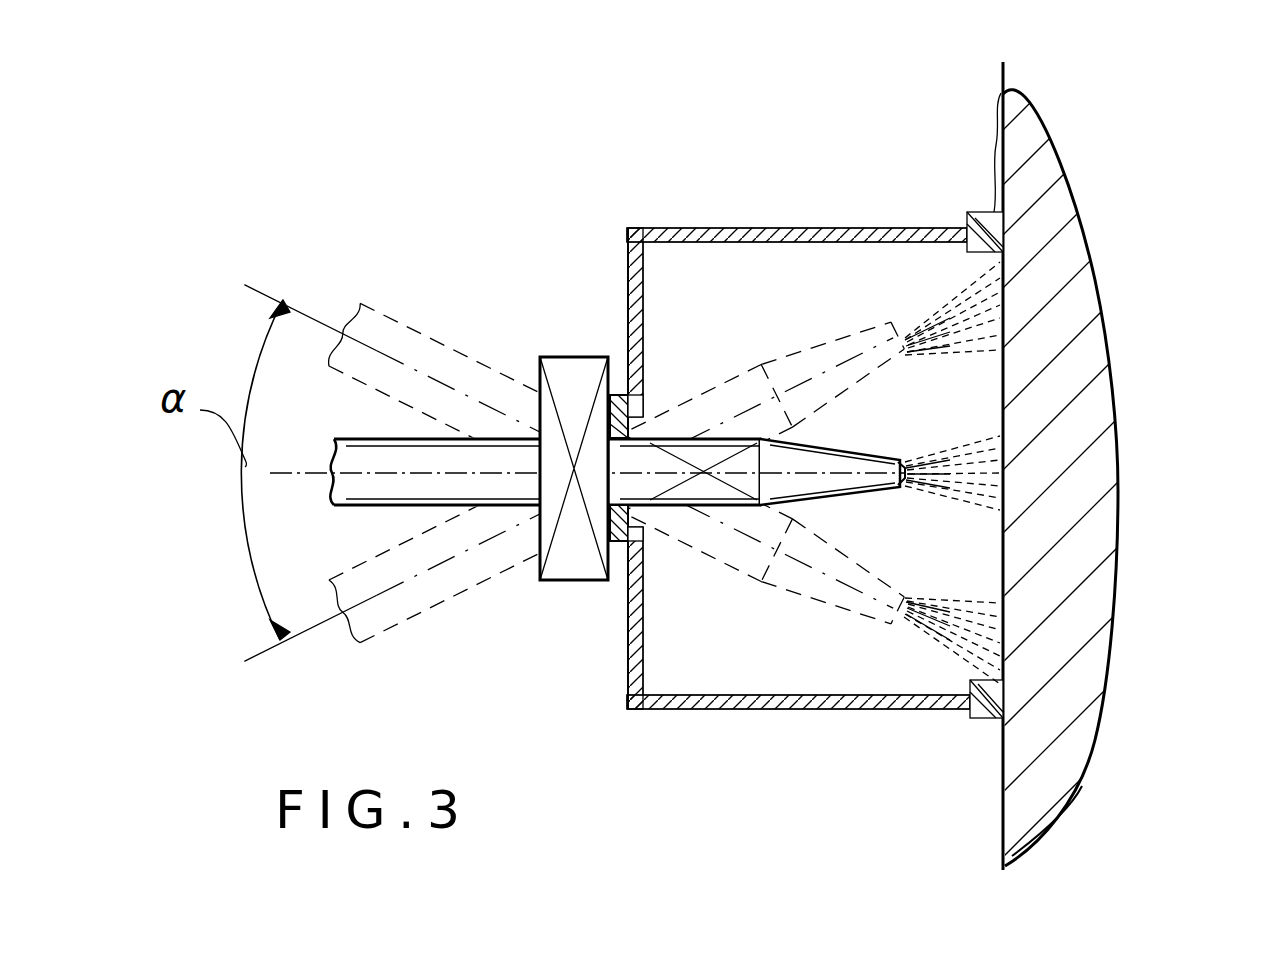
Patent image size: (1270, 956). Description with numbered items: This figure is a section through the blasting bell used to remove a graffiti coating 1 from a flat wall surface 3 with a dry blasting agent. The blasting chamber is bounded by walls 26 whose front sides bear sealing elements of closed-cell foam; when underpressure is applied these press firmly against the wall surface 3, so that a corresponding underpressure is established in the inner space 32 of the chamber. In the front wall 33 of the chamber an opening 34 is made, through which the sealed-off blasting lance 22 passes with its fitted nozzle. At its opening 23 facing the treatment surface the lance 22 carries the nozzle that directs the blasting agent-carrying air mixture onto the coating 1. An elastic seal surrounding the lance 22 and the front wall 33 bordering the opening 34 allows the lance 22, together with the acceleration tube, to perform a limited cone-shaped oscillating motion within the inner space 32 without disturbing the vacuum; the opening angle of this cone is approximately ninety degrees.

The graffiti coating 1 is at (1040, 127).
The flat wall surface 3 is at (1005, 800).
The blasting lance 22 is at (685, 438).
The opening 23 is at (903, 473).
The walls 26 is at (847, 228).
The inner space 32 is at (803, 304).
The front wall 33 is at (627, 294).
The opening 34 is at (647, 523).